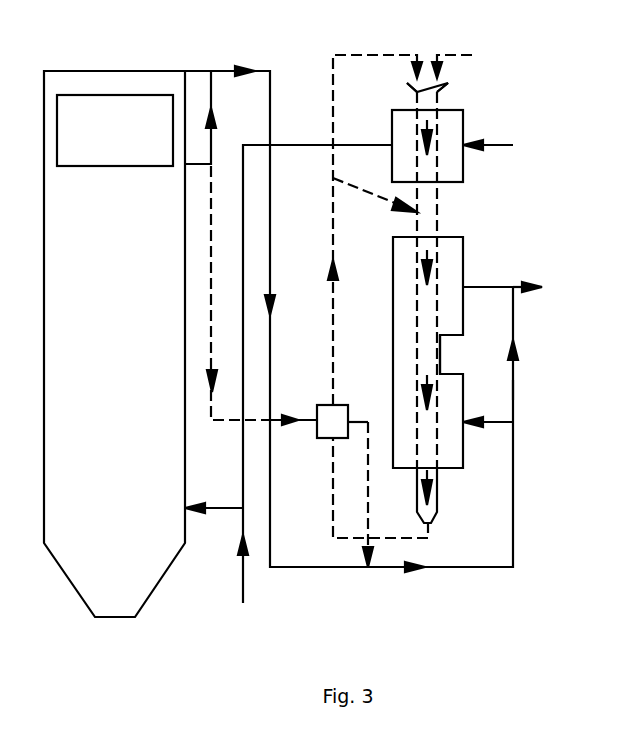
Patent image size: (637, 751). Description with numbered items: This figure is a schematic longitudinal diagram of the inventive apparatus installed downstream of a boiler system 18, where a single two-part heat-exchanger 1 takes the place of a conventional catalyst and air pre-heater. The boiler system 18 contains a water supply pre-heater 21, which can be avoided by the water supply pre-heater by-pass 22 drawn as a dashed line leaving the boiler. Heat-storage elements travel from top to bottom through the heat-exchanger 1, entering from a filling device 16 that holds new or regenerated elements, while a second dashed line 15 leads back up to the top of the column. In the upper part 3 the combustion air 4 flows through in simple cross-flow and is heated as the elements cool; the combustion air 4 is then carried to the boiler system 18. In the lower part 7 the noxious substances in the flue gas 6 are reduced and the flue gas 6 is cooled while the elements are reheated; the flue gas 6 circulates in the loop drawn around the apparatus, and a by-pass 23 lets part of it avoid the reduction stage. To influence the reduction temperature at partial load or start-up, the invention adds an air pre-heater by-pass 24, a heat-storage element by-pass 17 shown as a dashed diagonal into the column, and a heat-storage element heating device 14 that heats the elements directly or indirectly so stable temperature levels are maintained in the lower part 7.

The heat-exchanger 1 is at (436, 235).
The upper part of heat-exchanger 3 is at (432, 118).
The combustion air 4 is at (213, 510).
The flue gas 6 is at (259, 70).
The lower part of heat-exchanger 7 is at (440, 354).
The heating device 14 is at (323, 432).
The recycle line 15 is at (383, 55).
The filling device 16 is at (472, 55).
The heat-storage element by-pass 17 is at (380, 200).
The boiler system 18 is at (102, 376).
The water supply pre-heater 21 is at (104, 145).
The water supply pre-heater by-pass 22 is at (213, 97).
The by-pass 23 is at (513, 390).
The air pre-heater by-pass 24 is at (243, 590).